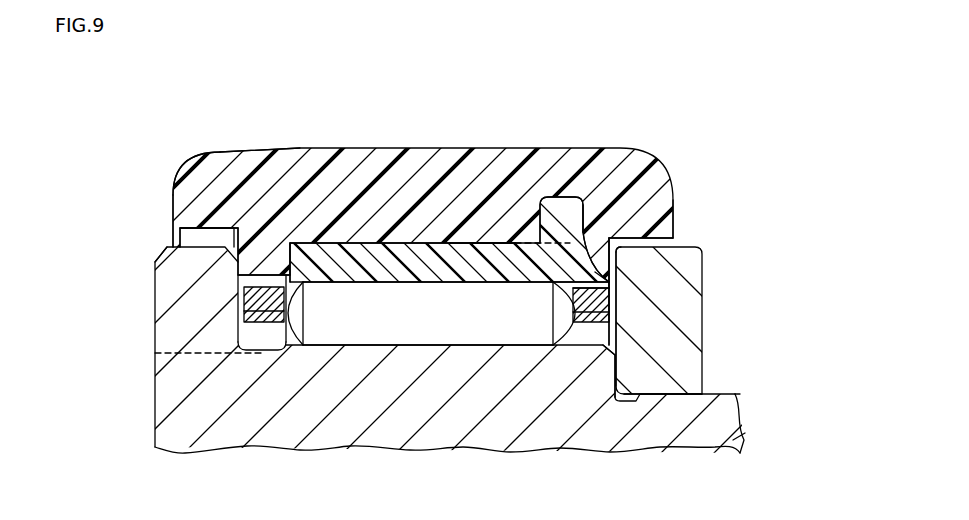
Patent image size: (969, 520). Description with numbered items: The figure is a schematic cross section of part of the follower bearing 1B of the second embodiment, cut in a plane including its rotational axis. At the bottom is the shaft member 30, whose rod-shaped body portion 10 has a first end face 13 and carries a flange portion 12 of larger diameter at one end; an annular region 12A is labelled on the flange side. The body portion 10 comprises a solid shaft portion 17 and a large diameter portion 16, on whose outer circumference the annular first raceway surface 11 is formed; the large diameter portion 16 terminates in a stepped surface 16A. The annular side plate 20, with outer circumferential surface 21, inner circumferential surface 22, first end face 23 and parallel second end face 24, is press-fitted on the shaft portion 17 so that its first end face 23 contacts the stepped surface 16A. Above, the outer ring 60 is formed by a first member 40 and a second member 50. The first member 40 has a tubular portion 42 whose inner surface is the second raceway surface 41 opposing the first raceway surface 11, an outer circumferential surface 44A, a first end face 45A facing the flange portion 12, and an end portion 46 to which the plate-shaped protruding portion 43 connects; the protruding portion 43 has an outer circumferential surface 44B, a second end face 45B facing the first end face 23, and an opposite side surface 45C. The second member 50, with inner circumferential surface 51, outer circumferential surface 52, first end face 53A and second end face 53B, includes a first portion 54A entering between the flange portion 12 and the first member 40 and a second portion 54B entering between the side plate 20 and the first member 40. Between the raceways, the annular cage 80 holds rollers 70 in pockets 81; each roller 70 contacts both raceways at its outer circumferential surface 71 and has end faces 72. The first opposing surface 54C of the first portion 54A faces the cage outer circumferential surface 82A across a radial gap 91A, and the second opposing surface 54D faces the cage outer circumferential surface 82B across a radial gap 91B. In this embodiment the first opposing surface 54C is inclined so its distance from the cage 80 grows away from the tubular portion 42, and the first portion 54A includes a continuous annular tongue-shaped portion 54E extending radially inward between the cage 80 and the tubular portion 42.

The follower bearing 1B is at (737, 99).
The body portion 10 is at (720, 407).
The first raceway surface 11 is at (540, 330).
The flange portion 12 is at (183, 287).
The protrusion 12A is at (198, 238).
The first end face 13 is at (155, 433).
The large diameter portion 16 is at (335, 360).
The stepped surface 16A is at (625, 385).
The shaft portion 17 is at (720, 430).
The side plate 20 is at (700, 372).
The outer circumferential surface 21 is at (614, 240).
The inner circumferential surface 22 is at (663, 396).
The first end face 23 is at (500, 240).
The second end face 24 is at (703, 290).
The shaft member 30 is at (799, 365).
The first member 40 is at (408, 185).
The second raceway surface 41 is at (392, 296).
The tubular portion 42 is at (474, 256).
The protruding portion 43 is at (545, 220).
The outer circumferential surface 44A is at (345, 258).
The outer circumferential surface 44B is at (572, 232).
The first end face 45A is at (285, 262).
The second end face 45B is at (611, 240).
The side surface 45C is at (520, 270).
The end portion 46 is at (580, 225).
The second member 50 is at (437, 243).
The inner circumferential surface 51 is at (432, 282).
The outer circumferential surface 52 is at (262, 185).
The first end face 53A is at (172, 203).
The second end face 53B is at (592, 268).
The first portion 54A is at (260, 253).
The second portion 54B is at (600, 258).
The first opposing surface 54C is at (241, 320).
The second opposing surface 54D is at (600, 318).
The tongue-shaped portion 54E is at (250, 345).
The outer ring 60 is at (461, 102).
The roller 70 is at (388, 318).
The outer circumferential surface 71 is at (479, 245).
The end face 72 is at (598, 310).
The cage 80 is at (273, 362).
The pocket 81 is at (296, 290).
The outer circumferential surface 82A is at (157, 255).
The outer circumferential surface 82B is at (595, 278).
The radial gap 91A is at (257, 252).
The radial gap 91B is at (605, 300).